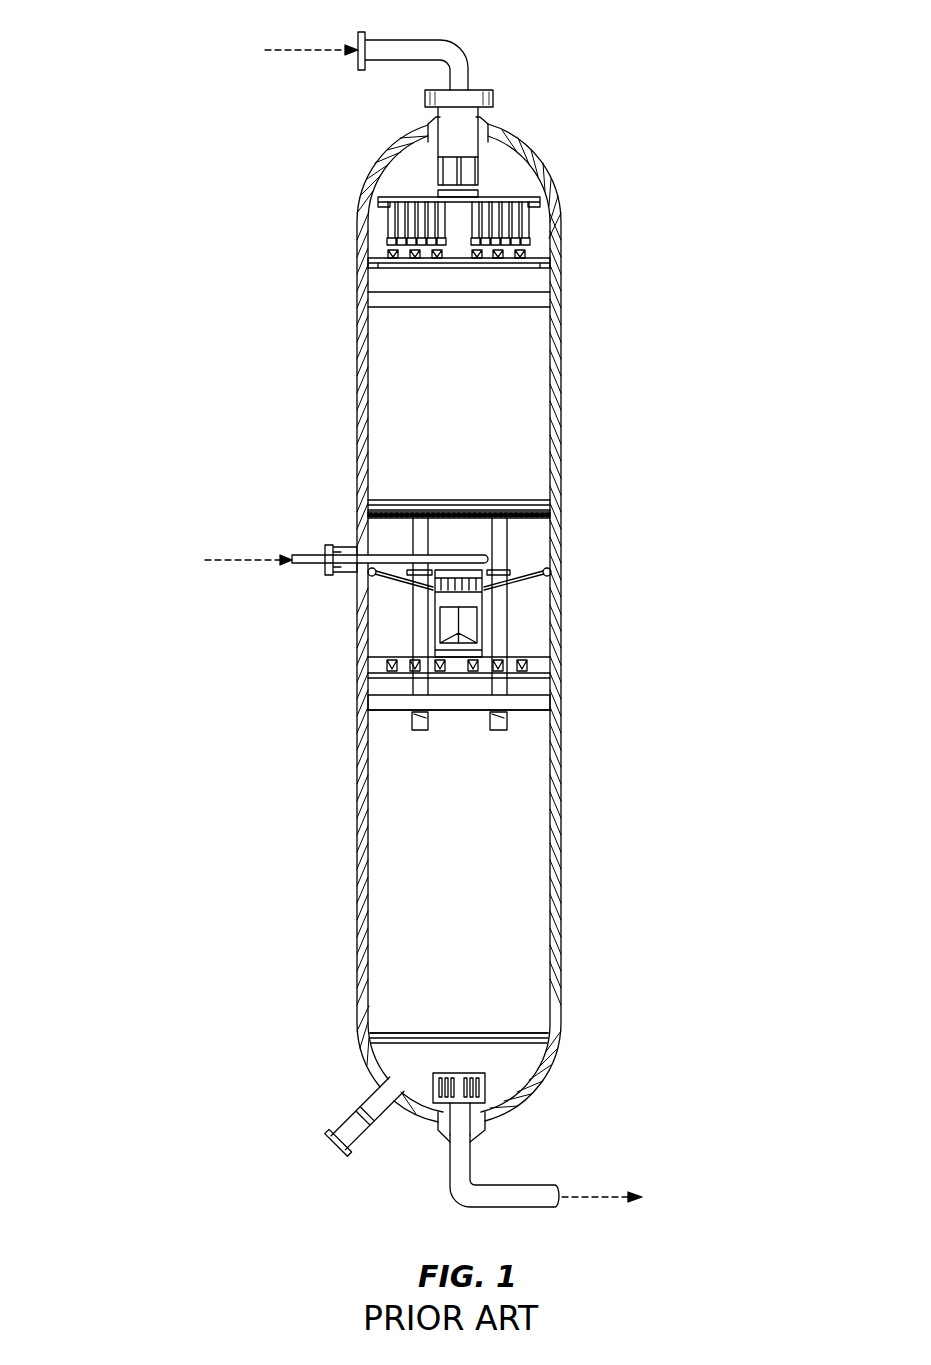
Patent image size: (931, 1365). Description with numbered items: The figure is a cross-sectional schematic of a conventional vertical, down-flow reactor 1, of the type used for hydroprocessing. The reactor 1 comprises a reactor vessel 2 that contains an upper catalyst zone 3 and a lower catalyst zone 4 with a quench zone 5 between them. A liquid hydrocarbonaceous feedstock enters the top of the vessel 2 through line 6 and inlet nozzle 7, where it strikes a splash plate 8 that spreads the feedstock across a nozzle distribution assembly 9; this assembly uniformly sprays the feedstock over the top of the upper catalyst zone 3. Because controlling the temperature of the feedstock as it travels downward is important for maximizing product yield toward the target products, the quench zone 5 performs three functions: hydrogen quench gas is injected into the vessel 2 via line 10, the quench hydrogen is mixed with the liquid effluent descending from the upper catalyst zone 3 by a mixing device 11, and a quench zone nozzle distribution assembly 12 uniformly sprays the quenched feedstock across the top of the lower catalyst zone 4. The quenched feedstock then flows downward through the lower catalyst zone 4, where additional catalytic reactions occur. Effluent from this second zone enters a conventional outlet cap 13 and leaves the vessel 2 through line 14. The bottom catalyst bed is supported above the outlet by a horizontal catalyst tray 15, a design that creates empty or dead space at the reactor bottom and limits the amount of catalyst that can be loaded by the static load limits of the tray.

The reactor 1 is at (113, 50).
The reactor vessel 2 is at (372, 178).
The upper catalyst zone 3 is at (568, 307).
The lower catalyst zone 4 is at (568, 697).
The quench zone 5 is at (568, 517).
The line 6 is at (452, 40).
The inlet nozzle 7 is at (450, 127).
The splash plate 8 is at (463, 175).
The nozzle distribution assembly 9 is at (568, 190).
The line 10 is at (317, 555).
The mixing device 11 is at (440, 600).
The quench zone nozzle distribution assembly 12 is at (373, 663).
The outlet cap 13 is at (433, 1114).
The line 14 is at (517, 1185).
The horizontal catalyst tray 15 is at (545, 1043).